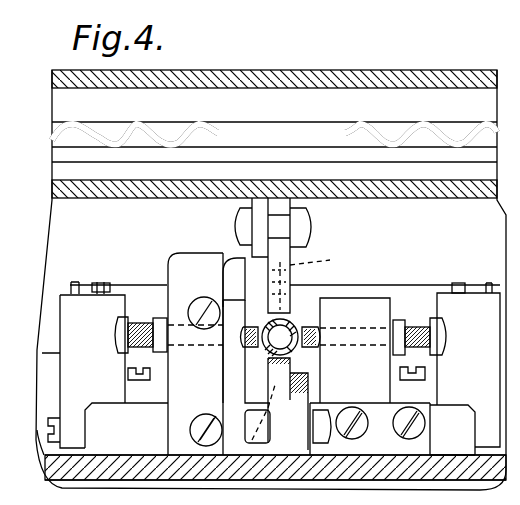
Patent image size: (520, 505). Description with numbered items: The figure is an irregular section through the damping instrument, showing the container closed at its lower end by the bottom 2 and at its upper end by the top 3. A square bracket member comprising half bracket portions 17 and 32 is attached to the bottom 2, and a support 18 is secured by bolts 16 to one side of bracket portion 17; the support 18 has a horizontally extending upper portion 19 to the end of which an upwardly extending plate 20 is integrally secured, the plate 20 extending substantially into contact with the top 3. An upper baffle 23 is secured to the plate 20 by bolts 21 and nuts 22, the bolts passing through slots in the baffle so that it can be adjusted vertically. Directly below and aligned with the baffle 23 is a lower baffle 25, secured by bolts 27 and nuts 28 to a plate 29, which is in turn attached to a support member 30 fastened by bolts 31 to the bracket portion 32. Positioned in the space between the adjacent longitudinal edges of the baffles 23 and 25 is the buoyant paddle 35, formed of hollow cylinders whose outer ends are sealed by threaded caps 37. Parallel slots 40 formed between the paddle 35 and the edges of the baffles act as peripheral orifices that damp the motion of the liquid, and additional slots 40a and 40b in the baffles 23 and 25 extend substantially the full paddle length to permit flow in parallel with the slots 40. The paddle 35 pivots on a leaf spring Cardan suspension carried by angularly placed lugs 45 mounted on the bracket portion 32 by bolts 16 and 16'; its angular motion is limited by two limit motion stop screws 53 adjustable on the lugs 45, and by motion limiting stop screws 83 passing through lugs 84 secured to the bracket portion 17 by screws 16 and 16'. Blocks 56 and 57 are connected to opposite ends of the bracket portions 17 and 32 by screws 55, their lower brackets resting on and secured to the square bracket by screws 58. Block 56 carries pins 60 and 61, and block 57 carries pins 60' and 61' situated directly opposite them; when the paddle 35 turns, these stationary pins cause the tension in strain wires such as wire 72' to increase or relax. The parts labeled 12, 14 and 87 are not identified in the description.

The bottom 2 is at (114, 465).
The top 3 is at (178, 190).
The wall 12 is at (312, 75).
The corrugated strip 14 is at (160, 135).
The bolts 16 is at (200, 422).
The bolts 16' is at (333, 414).
The half bracket portion 17 is at (150, 424).
The support 18 is at (182, 282).
The horizontally extending upper portion 19 is at (225, 290).
The upwardly extending plate 20 is at (250, 245).
The bolts 21 is at (312, 228).
The nuts 22 is at (232, 214).
The baffle 23 is at (292, 268).
The lower baffle 25 is at (283, 374).
The bolts 27 is at (262, 410).
The nuts 28 is at (356, 440).
The plate 29 is at (300, 385).
The support member 30 is at (420, 442).
The bolts 31 is at (414, 416).
The half bracket portion 32 is at (438, 410).
The buoyant paddle 35 is at (306, 328).
The threaded caps 37 is at (286, 341).
The slots 40 is at (292, 285).
The additional slot 40a is at (320, 272).
The additional slot 40b is at (238, 443).
The angularly placed lugs 45 is at (378, 297).
The limit motion stop screws 53 is at (470, 318).
The screws 55 is at (48, 433).
The block 56 is at (78, 282).
The block 57 is at (478, 361).
The screws 58 is at (128, 374).
The pin 60 is at (118, 276).
The pin 60' is at (447, 275).
The pin 61 is at (108, 277).
The pin 61' is at (480, 275).
The wire 72' is at (395, 270).
The motion limiting stop screws 83 is at (118, 333).
The lugs 84 is at (258, 297).
The channel 87 is at (343, 169).